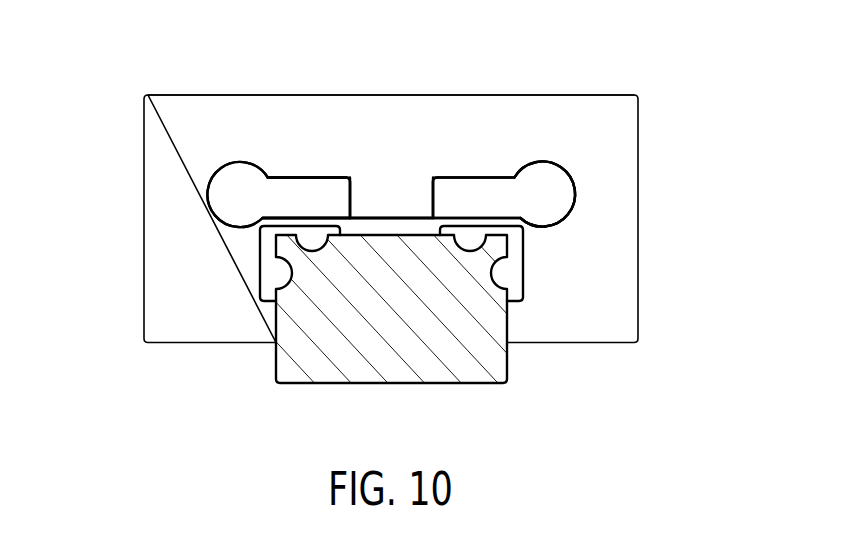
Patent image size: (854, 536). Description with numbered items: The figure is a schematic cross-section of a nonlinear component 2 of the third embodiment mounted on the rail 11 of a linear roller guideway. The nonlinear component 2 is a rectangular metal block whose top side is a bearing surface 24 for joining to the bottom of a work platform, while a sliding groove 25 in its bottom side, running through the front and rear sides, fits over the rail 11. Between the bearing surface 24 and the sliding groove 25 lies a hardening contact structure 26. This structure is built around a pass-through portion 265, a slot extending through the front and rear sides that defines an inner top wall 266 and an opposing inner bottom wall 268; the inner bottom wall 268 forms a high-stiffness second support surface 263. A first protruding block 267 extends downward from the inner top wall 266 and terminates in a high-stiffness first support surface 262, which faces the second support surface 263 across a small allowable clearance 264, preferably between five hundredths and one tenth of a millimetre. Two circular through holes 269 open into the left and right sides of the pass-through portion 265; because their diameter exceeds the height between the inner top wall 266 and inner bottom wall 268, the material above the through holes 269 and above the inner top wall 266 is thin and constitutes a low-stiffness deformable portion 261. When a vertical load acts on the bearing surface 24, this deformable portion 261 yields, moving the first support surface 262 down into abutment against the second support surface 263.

The nonlinear component 2 is at (650, 223).
The rail 11 is at (460, 355).
The bearing surface 24 is at (575, 95).
The sliding groove 25 is at (273, 278).
The hardening contact structure 26 is at (499, 172).
The low-stiffness deformable portion 261 is at (265, 140).
The high-stiffness first support surface 262 is at (395, 215).
The high-stiffness second support surface 263 is at (300, 217).
The allowable clearance 264 is at (380, 215).
The pass-through portion 265 is at (308, 195).
The inner top wall 266 is at (558, 195).
The first protruding block 267 is at (368, 205).
The inner bottom wall 268 is at (199, 182).
The circular through holes 269 is at (218, 198).